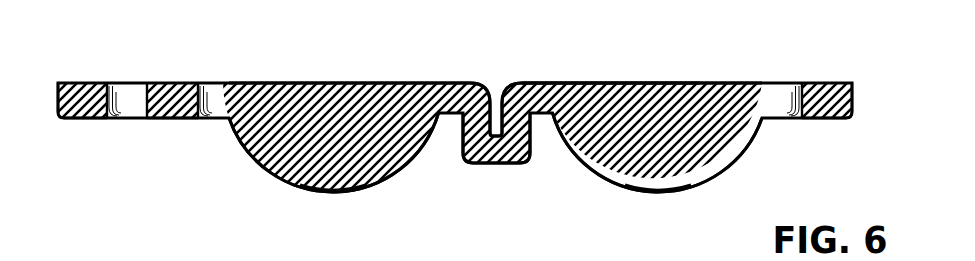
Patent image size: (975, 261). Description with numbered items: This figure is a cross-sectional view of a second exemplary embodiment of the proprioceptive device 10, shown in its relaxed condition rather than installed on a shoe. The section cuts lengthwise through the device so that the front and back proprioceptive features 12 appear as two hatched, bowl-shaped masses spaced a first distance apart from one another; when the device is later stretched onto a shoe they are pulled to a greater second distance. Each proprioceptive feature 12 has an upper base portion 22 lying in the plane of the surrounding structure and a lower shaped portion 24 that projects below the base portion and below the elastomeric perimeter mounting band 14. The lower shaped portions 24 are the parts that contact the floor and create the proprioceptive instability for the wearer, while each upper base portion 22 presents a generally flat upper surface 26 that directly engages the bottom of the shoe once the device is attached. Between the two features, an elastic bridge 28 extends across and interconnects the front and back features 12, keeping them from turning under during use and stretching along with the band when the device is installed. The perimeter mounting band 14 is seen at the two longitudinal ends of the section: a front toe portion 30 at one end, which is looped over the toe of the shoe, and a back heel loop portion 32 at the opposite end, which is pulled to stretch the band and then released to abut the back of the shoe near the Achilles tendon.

The proprioceptive device 10 is at (232, 67).
The proprioceptive feature 12 is at (280, 176).
The perimeter mounting band 14 is at (172, 118).
The upper base portion 22 is at (338, 92).
The lower shaped portion 24 is at (330, 190).
The upper surface 26 is at (596, 83).
The bridge 28 is at (500, 165).
The front toe portion 30 is at (828, 83).
The back heel loop portion 32 is at (84, 83).